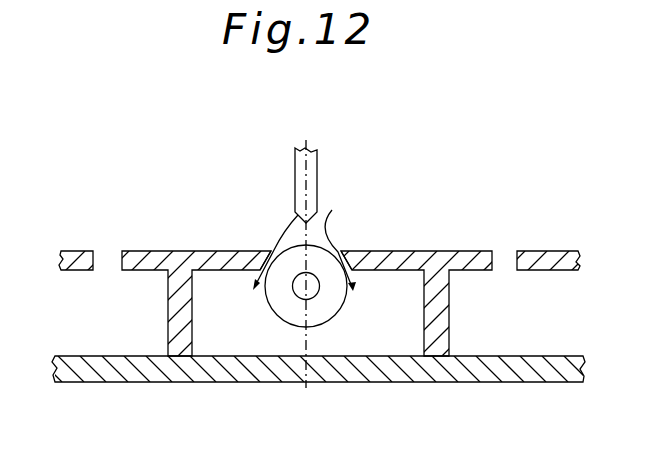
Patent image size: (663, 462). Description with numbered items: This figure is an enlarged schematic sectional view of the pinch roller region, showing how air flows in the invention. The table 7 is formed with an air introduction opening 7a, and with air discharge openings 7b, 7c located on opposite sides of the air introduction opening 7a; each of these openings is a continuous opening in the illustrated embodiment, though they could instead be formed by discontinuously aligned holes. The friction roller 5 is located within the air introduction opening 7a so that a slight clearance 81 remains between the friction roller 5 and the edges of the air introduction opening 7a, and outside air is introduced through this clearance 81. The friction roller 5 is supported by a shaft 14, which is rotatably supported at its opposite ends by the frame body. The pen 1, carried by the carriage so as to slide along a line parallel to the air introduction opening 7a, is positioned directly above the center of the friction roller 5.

The pen 1 is at (306, 172).
The friction roller 5 is at (330, 295).
The table 7 is at (410, 251).
The air introduction opening 7a is at (274, 250).
The air discharge opening 7b is at (132, 308).
The air discharge opening 7c is at (467, 307).
The shaft 14 is at (303, 292).
The clearance 81 is at (262, 251).